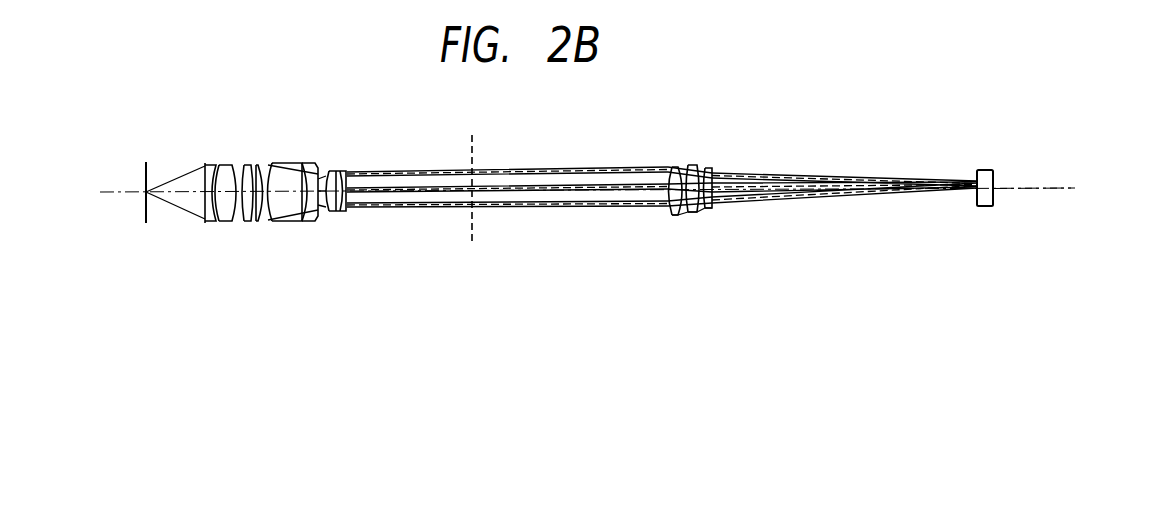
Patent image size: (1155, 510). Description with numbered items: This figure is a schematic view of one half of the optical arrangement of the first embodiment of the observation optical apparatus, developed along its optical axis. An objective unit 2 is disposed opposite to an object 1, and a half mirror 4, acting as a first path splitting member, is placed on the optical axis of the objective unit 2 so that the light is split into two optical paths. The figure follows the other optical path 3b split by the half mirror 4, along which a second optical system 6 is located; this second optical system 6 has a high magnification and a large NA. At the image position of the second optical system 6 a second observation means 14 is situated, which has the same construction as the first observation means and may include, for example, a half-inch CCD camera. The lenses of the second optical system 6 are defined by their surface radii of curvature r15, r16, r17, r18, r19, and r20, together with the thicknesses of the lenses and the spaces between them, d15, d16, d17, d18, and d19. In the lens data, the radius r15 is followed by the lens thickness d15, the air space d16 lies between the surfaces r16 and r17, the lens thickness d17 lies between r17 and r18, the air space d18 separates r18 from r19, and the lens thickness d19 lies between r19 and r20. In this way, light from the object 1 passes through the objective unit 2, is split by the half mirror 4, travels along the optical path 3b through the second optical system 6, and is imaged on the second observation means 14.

The object 1 is at (144, 168).
The objective unit 2 is at (360, 125).
The half mirror 4 is at (470, 136).
The second optical system 6 is at (733, 123).
The second observation means 14 is at (986, 169).
The optical path 3b is at (1046, 188).
The radius of curvature of lens surface r15 is at (670, 172).
The radius of curvature of lens surface r16 is at (678, 168).
The radius of curvature of lens surface r17 is at (688, 165).
The radius of curvature of lens surface r18 is at (698, 165).
The radius of curvature of lens surface r19 is at (706, 168).
The radius of curvature of lens surface r20 is at (712, 168).
The lens thickness d15 is at (670, 207).
The space between lenses d16 is at (682, 212).
The lens thickness d17 is at (694, 212).
The space between lenses d18 is at (703, 210).
The lens thickness d19 is at (711, 208).